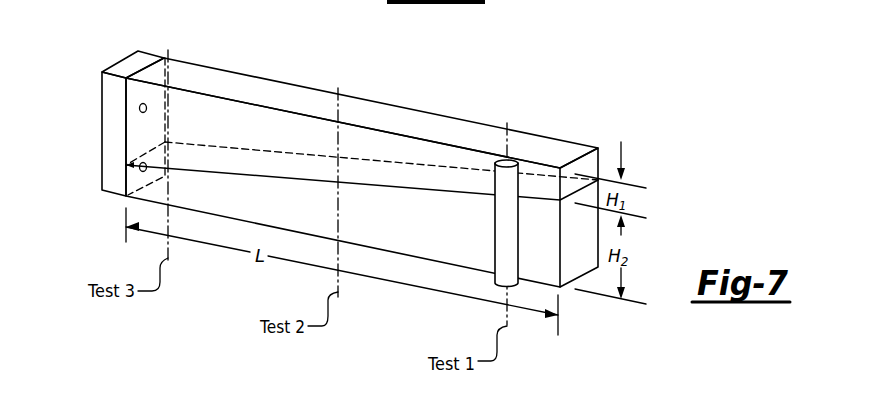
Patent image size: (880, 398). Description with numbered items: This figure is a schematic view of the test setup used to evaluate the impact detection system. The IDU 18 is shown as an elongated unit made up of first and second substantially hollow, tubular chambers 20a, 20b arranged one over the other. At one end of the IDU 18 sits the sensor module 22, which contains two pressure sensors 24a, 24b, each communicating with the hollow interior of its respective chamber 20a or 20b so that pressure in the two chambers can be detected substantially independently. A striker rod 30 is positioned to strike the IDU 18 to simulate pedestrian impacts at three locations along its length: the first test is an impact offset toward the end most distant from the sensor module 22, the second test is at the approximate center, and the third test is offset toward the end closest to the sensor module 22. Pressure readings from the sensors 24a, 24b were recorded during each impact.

The IDU 18 is at (362, 175).
The first tubular chamber 20a is at (305, 140).
The second tubular chamber 20b is at (437, 236).
The sensor module 22 is at (113, 107).
The pressure sensor 24a is at (139, 108).
The pressure sensor 24b is at (147, 164).
The striker rod 30 is at (510, 158).